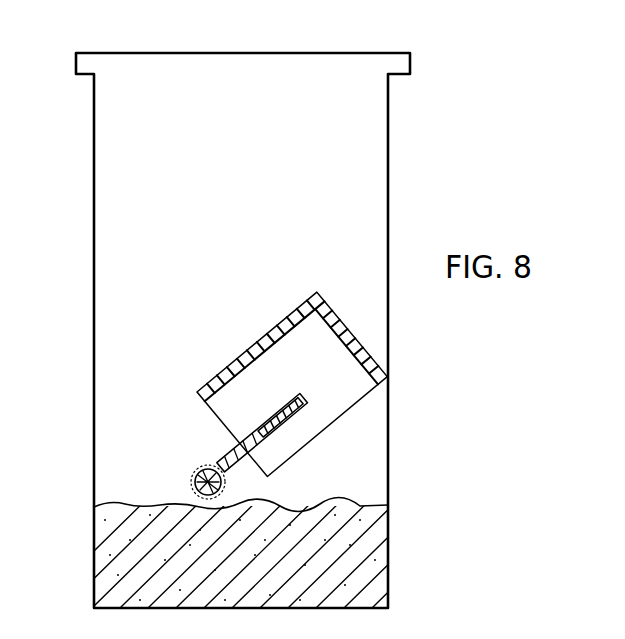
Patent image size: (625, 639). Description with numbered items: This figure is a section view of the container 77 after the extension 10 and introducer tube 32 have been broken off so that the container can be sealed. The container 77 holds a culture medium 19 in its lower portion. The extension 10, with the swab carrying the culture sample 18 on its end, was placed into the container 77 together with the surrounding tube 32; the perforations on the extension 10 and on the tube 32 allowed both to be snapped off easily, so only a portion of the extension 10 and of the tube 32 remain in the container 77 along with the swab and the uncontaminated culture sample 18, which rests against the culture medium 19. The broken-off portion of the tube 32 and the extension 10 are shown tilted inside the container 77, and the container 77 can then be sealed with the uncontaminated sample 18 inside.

The container 77 is at (398, 48).
The culture medium 19 is at (373, 562).
The introducer tube 32 is at (353, 402).
The extension 10 is at (340, 440).
The culture sample 18 is at (190, 482).